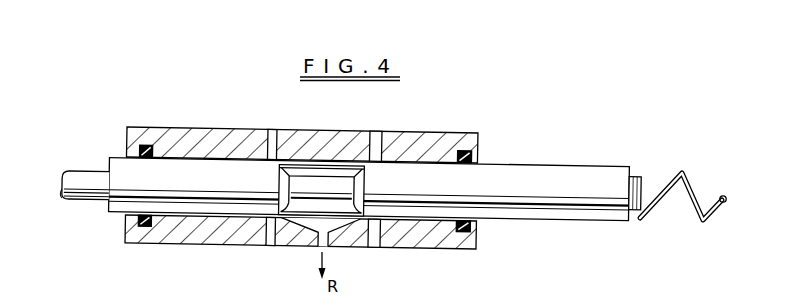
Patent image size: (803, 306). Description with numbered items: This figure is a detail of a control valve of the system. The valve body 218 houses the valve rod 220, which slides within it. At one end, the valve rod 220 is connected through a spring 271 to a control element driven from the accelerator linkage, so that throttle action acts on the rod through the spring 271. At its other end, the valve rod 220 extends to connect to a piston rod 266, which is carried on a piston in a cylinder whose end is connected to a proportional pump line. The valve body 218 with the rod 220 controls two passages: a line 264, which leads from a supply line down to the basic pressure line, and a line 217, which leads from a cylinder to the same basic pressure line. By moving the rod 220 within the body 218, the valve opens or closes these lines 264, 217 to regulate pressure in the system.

The valve body 218 is at (443, 143).
The valve rod 220 is at (558, 175).
The piston rod 266 is at (93, 160).
The line 217 is at (273, 243).
The line 264 is at (373, 243).
The spring 271 is at (650, 210).